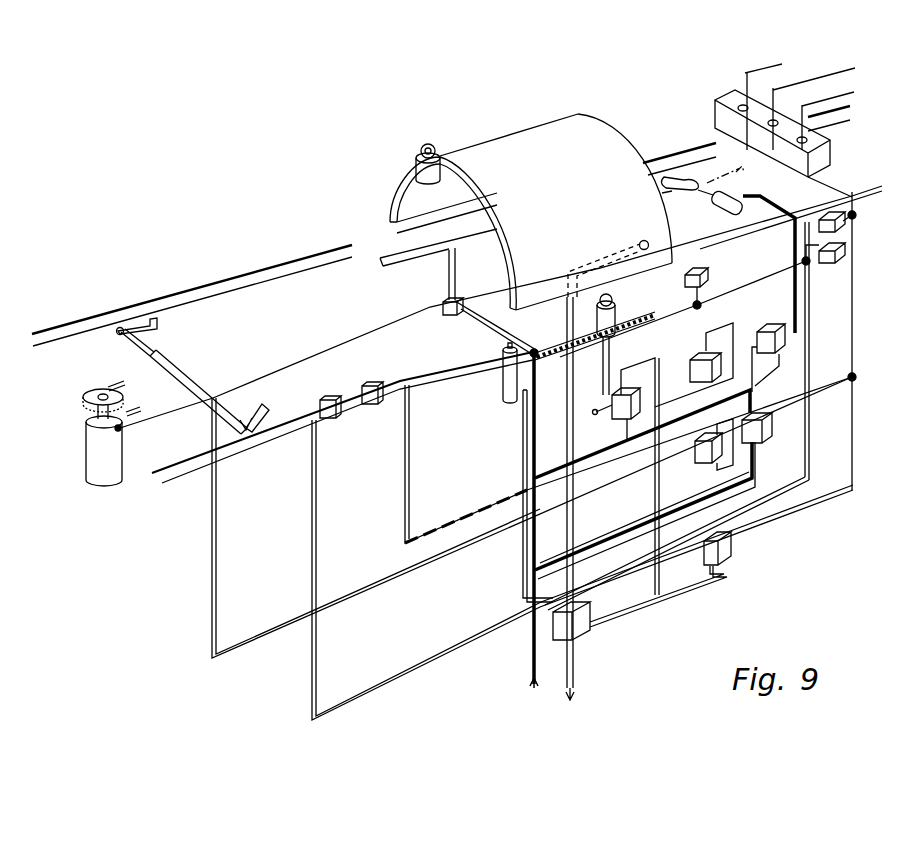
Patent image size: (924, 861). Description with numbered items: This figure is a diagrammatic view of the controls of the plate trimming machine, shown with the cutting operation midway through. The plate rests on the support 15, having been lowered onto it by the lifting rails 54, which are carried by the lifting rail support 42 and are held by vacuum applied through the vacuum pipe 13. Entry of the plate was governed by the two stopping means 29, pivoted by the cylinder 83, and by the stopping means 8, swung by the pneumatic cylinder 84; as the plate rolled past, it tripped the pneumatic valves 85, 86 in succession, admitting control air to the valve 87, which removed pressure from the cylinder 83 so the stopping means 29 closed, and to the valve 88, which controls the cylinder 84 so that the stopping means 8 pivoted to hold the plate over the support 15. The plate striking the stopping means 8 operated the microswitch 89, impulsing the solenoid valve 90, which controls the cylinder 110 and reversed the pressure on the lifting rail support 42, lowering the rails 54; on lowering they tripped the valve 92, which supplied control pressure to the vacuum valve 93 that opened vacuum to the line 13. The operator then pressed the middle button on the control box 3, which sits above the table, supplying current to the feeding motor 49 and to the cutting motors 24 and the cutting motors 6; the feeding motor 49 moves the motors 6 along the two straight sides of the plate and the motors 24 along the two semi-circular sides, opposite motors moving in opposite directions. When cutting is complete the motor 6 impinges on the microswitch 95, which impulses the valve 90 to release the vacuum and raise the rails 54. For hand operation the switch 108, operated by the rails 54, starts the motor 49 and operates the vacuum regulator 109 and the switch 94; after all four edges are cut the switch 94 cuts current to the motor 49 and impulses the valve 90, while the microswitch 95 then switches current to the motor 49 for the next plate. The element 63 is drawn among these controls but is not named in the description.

The control box 3 is at (804, 178).
The cutting motors 6 is at (616, 318).
The stopping means 8 is at (668, 194).
The vacuum pipe 13 is at (566, 418).
The support 15 is at (612, 139).
The cutting motors 24 is at (415, 156).
The stopping means 29 is at (160, 326).
The lifting rail support 42 is at (449, 276).
The feeding motor 49 is at (124, 452).
The lifting rails 54 is at (409, 268).
The switch 63 is at (846, 252).
The cylinder 83 is at (185, 372).
The pneumatic cylinder 84 is at (718, 207).
The pneumatic valve 85 is at (320, 398).
The pneumatic valve 86 is at (362, 384).
The valve 87 is at (721, 372).
The valve 88 is at (792, 337).
The microswitch 89 is at (680, 173).
The solenoid valve 90 is at (765, 435).
The valve 92 is at (613, 419).
The vacuum valve 93 is at (582, 632).
The switch 94 is at (846, 226).
The microswitch 95 is at (708, 280).
The switch 108 is at (443, 305).
The vacuum regulator 109 is at (727, 557).
The cylinder 110 is at (503, 378).